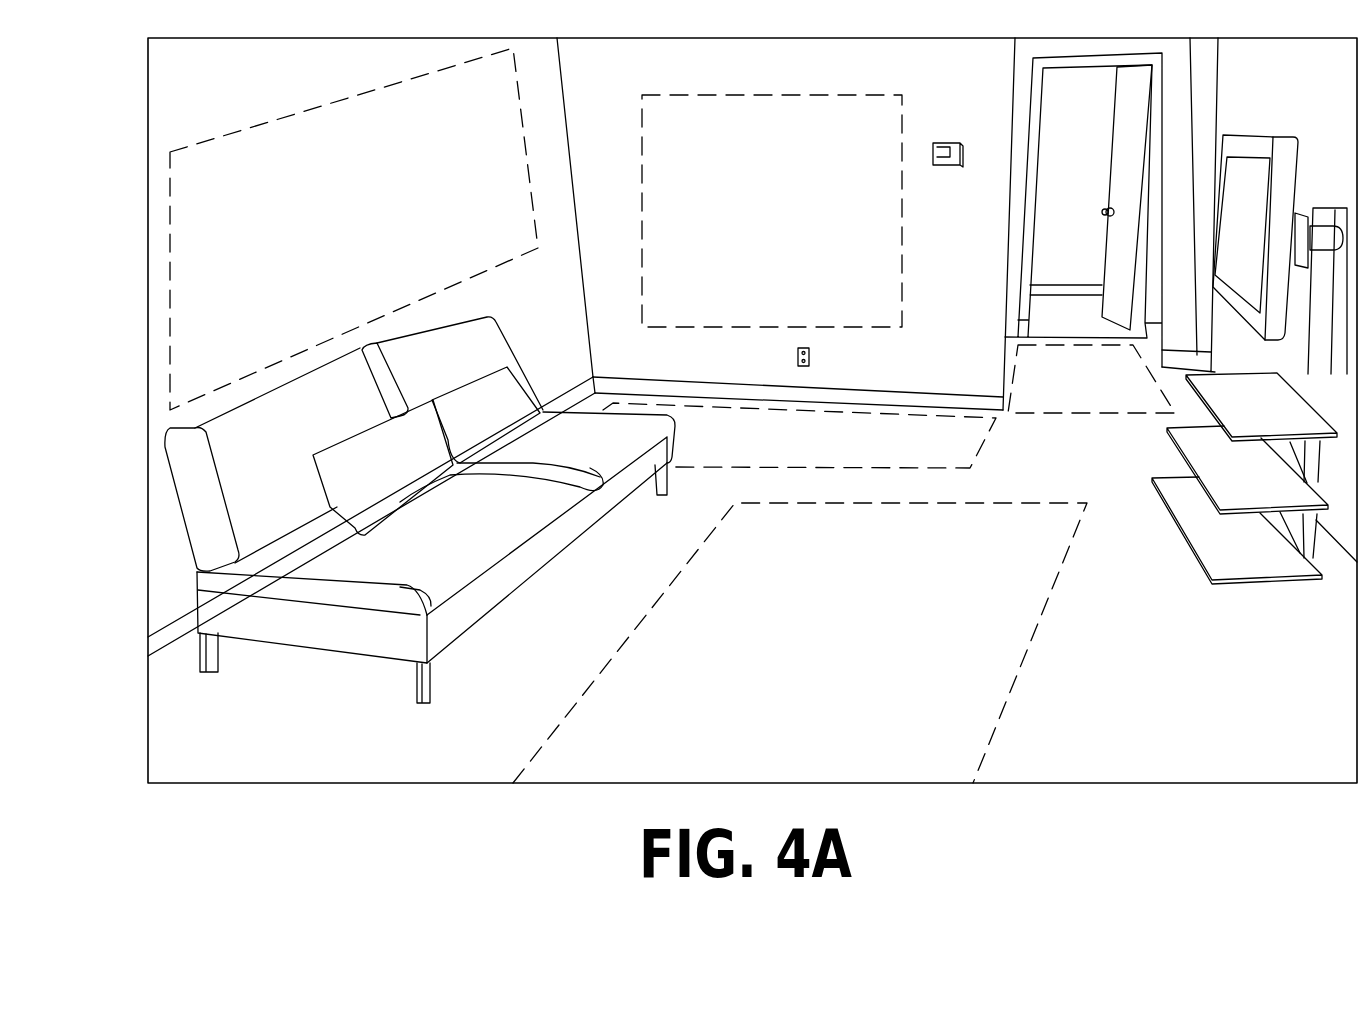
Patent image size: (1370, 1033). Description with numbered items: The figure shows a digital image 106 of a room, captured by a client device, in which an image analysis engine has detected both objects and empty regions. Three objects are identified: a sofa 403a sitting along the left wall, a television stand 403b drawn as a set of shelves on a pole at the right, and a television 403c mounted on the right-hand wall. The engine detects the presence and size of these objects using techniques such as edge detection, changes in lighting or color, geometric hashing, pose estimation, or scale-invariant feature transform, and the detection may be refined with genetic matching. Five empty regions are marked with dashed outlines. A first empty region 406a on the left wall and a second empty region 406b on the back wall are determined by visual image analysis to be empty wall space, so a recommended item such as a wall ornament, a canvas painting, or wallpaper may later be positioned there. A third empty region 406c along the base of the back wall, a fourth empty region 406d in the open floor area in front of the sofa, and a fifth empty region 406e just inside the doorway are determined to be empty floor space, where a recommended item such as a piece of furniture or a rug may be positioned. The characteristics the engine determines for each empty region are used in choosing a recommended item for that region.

The digital image 106 is at (1347, 772).
The object (sofa) 403a is at (509, 592).
The object (television stand) 403b is at (1196, 562).
The object (television) 403c is at (1254, 127).
The first empty region 406a is at (413, 238).
The second empty region 406b is at (830, 235).
The third empty region 406c is at (872, 448).
The fourth empty region 406d is at (927, 660).
The fifth empty region 406e is at (1142, 403).